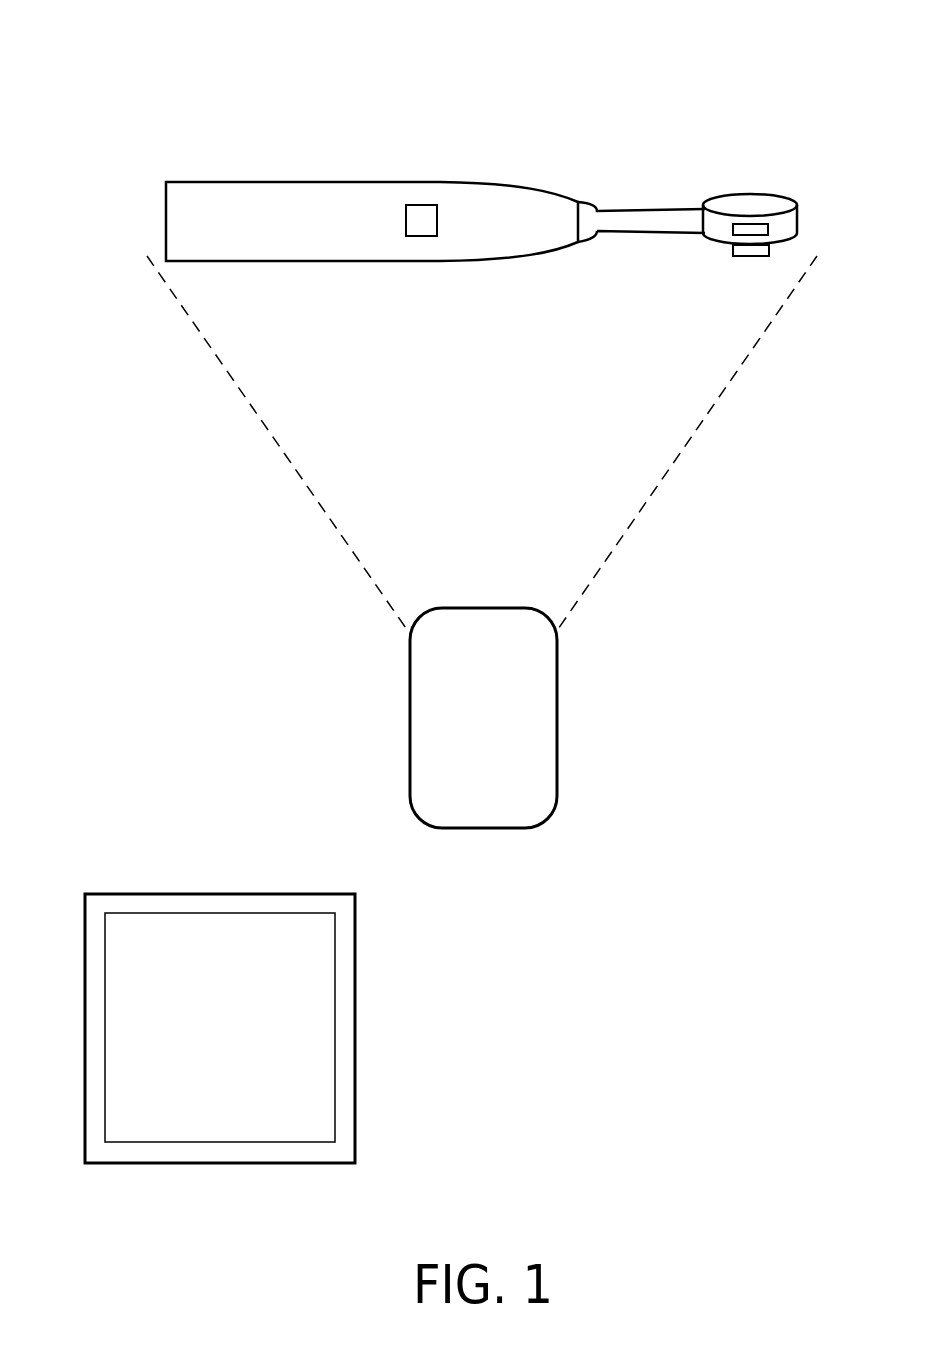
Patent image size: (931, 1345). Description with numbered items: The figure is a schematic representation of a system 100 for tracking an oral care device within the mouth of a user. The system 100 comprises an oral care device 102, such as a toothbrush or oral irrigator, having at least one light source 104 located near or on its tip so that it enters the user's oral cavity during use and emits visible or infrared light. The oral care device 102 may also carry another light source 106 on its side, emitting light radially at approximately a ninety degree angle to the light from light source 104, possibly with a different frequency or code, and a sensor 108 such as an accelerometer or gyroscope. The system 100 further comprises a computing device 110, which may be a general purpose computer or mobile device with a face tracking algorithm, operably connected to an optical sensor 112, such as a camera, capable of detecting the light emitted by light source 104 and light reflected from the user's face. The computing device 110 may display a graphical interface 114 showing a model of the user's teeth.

The system 100 is at (136, 84).
The oral care device 102 is at (289, 181).
The light source 104 is at (750, 257).
The light source 106 is at (752, 222).
The sensor 108 is at (422, 205).
The computing device 110 is at (355, 950).
The optical sensor 112 is at (433, 716).
The graphical interface 114 is at (305, 1013).